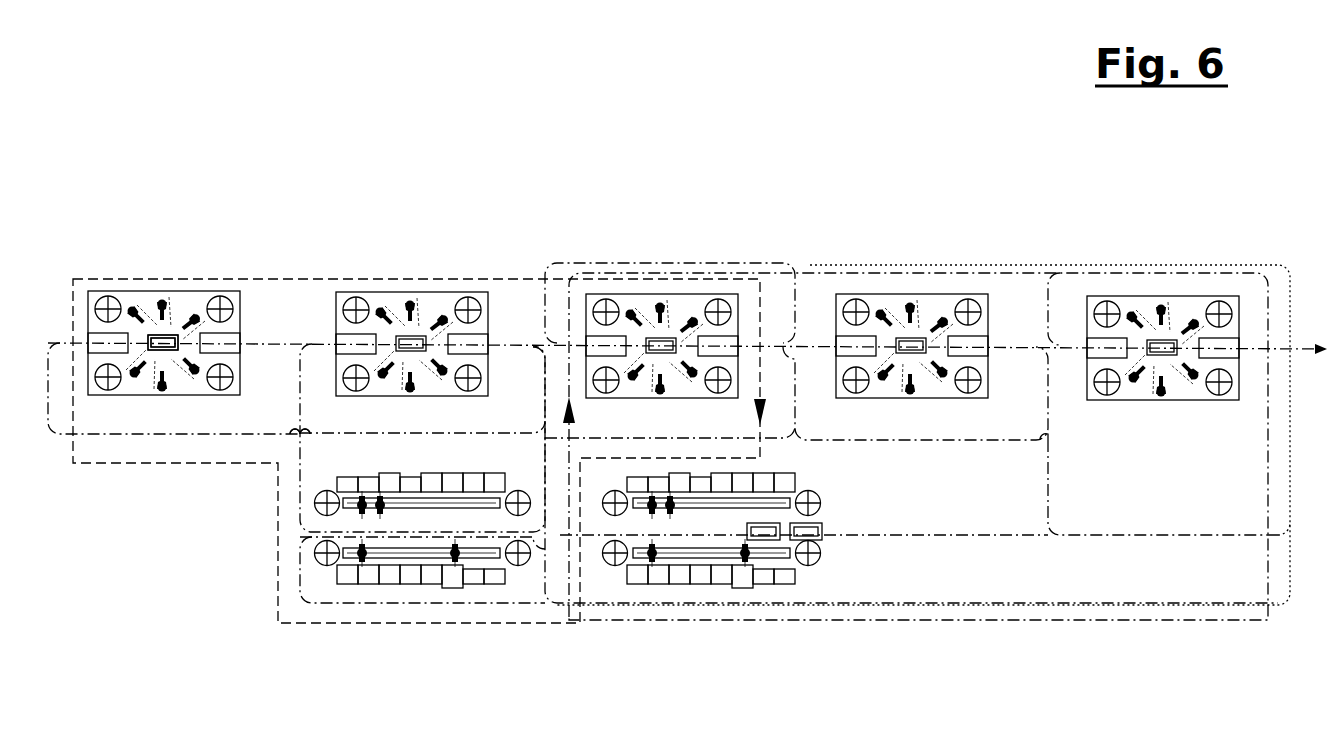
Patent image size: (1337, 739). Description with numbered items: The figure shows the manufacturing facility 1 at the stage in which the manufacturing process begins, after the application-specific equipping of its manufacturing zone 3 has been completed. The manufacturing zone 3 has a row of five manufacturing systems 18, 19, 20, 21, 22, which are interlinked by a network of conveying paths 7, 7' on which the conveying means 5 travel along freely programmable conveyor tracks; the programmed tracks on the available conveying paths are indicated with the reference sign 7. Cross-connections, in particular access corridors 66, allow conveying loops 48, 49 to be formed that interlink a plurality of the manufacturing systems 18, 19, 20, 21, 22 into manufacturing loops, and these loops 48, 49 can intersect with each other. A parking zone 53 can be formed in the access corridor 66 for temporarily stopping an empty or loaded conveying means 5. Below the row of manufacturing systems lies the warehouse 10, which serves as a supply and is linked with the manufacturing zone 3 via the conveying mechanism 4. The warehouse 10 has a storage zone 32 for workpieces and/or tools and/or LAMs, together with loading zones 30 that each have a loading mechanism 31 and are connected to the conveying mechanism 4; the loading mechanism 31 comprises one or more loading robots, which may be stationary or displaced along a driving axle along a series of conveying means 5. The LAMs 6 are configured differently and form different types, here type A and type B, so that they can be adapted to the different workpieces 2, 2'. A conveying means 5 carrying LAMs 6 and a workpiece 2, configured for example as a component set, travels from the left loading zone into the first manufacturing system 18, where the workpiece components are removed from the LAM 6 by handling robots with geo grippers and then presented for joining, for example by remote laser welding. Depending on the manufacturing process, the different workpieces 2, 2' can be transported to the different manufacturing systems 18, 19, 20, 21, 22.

The manufacturing facility 1 is at (328, 185).
The manufacturing zone 3 is at (328, 185).
The workpiece 2 is at (424, 482).
The workpiece 2' is at (716, 506).
The conveying mechanism 4 is at (1103, 536).
The conveying means 5 is at (182, 333).
The LAM 6 is at (182, 333).
The conveying path 7 is at (663, 402).
The conveying path 7' is at (670, 271).
The warehouse 10 is at (468, 603).
The first manufacturing system 18 is at (148, 303).
The manufacturing system 19 is at (395, 303).
The manufacturing system 20 is at (648, 300).
The manufacturing system 21 is at (898, 302).
The manufacturing system 22 is at (1187, 315).
The loading zone 30 is at (325, 538).
The loading mechanism 31 is at (455, 558).
The storage zone 32 is at (368, 588).
The conveying loop 48 is at (505, 279).
The conveying loop 49 is at (582, 273).
The parking zone 53 is at (295, 405).
The access corridor 66 is at (295, 405).